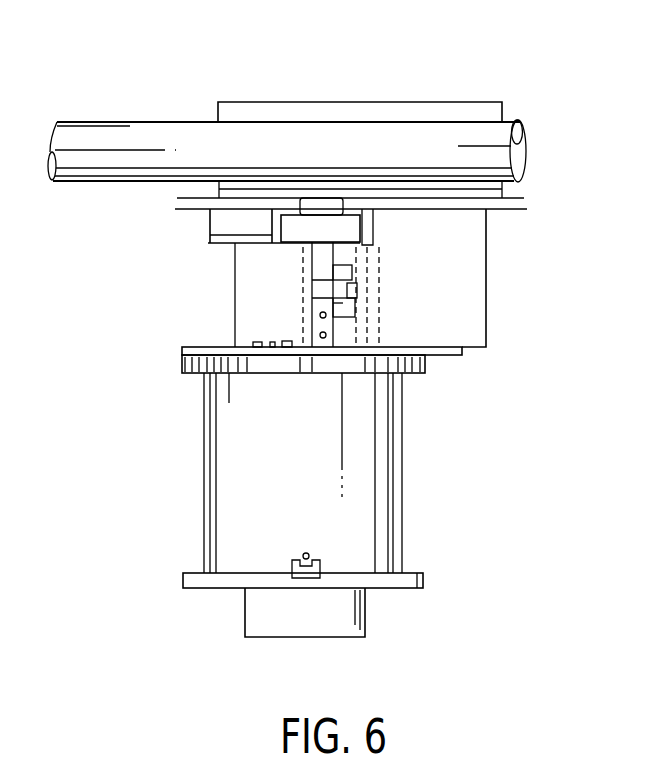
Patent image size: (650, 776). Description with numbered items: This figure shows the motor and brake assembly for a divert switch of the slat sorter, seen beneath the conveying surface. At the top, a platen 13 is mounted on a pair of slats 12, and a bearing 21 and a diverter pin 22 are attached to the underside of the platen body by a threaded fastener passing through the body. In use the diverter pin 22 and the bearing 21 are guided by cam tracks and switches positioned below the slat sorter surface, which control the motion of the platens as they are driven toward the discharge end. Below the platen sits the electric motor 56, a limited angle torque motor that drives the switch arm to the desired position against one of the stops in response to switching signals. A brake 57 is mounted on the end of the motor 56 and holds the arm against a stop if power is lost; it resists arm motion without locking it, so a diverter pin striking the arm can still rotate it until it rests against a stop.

The slat 12 is at (513, 158).
The platen 13 is at (304, 80).
The bearing 21 is at (348, 228).
The diverter pin 22 is at (317, 265).
The electric motor 56 is at (243, 467).
The brake 57 is at (269, 617).